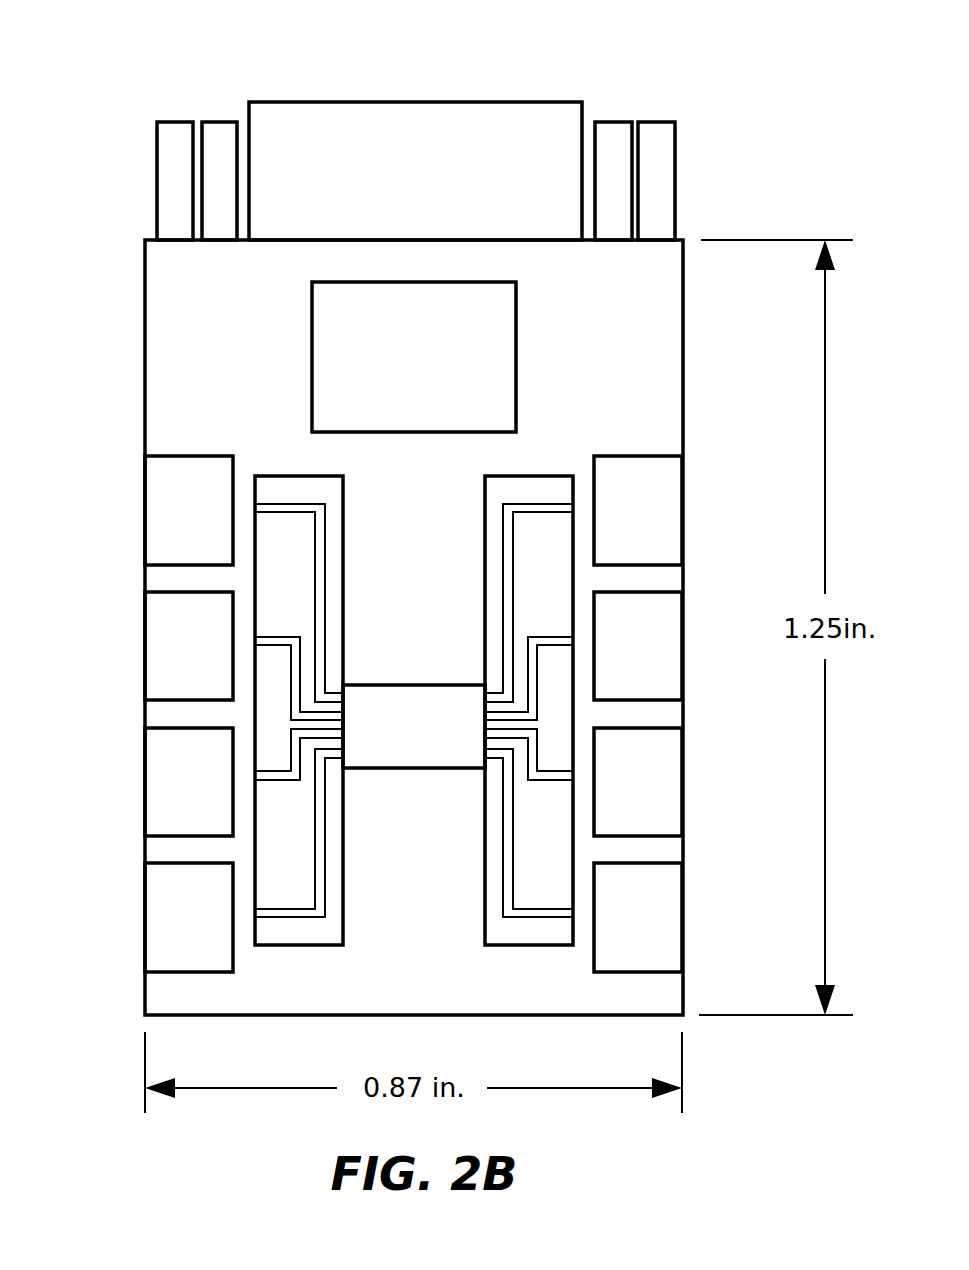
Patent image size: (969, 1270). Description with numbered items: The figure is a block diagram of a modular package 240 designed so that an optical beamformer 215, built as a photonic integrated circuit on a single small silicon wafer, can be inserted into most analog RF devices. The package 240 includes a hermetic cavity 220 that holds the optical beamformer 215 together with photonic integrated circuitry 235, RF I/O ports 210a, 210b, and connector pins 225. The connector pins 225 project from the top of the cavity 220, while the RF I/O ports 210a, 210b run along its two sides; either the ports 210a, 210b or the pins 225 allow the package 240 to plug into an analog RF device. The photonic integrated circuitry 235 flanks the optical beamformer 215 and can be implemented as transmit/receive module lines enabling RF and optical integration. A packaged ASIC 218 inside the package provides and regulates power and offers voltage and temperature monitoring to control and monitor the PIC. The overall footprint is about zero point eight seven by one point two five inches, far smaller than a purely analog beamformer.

The modular package 240 is at (203, 60).
The connector pins 225 is at (175, 209).
The hermetic cavity 220 is at (222, 296).
The packaged ASIC 218 is at (390, 407).
The optical beamformer 215 is at (390, 739).
The photonic integrated circuitry 235 is at (343, 815).
The RF I/O port 210a is at (131, 455).
The RF I/O port 210b is at (697, 455).